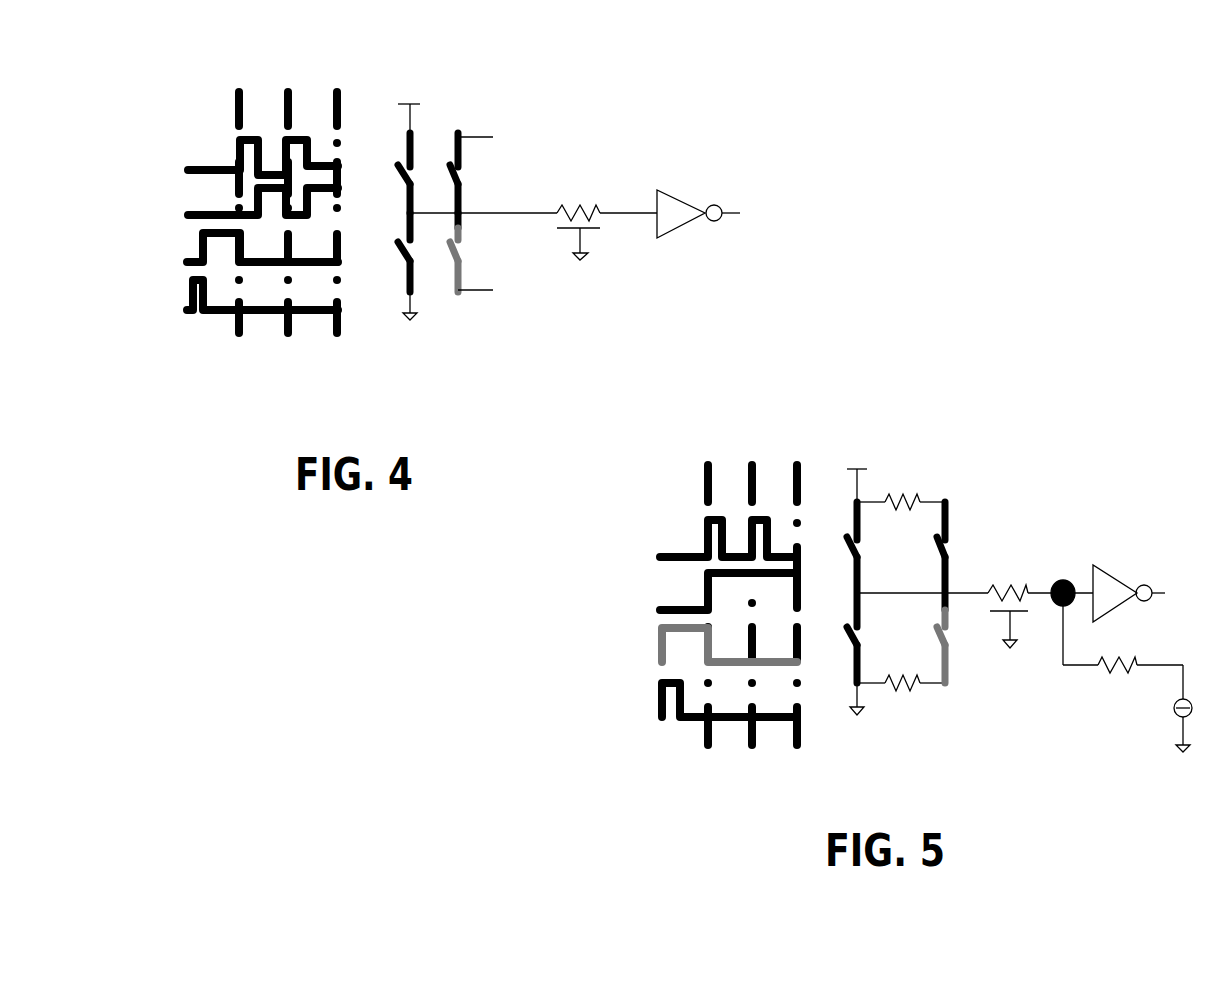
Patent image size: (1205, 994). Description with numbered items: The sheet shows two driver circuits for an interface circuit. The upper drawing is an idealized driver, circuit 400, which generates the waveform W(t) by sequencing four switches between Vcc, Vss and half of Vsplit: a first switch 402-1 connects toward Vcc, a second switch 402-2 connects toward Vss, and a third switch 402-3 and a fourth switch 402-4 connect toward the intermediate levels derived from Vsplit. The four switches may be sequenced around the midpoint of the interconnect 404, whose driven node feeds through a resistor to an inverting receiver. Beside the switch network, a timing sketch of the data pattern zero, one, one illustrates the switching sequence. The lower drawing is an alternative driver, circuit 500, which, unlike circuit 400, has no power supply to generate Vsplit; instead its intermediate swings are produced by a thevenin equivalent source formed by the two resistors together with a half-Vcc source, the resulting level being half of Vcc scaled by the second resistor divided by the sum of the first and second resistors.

In FIG. 4, the circuit 400 is at (510, 223).
In FIG. 4, the switch 402-1 is at (383, 162).
In FIG. 4, the switch 402-2 is at (388, 245).
In FIG. 4, the switch 402-3 is at (445, 143).
In FIG. 4, the switch 402-4 is at (448, 263).
In FIG. 4, the interconnect 404 is at (625, 193).
In FIG. 5, the circuit 500 is at (922, 789).